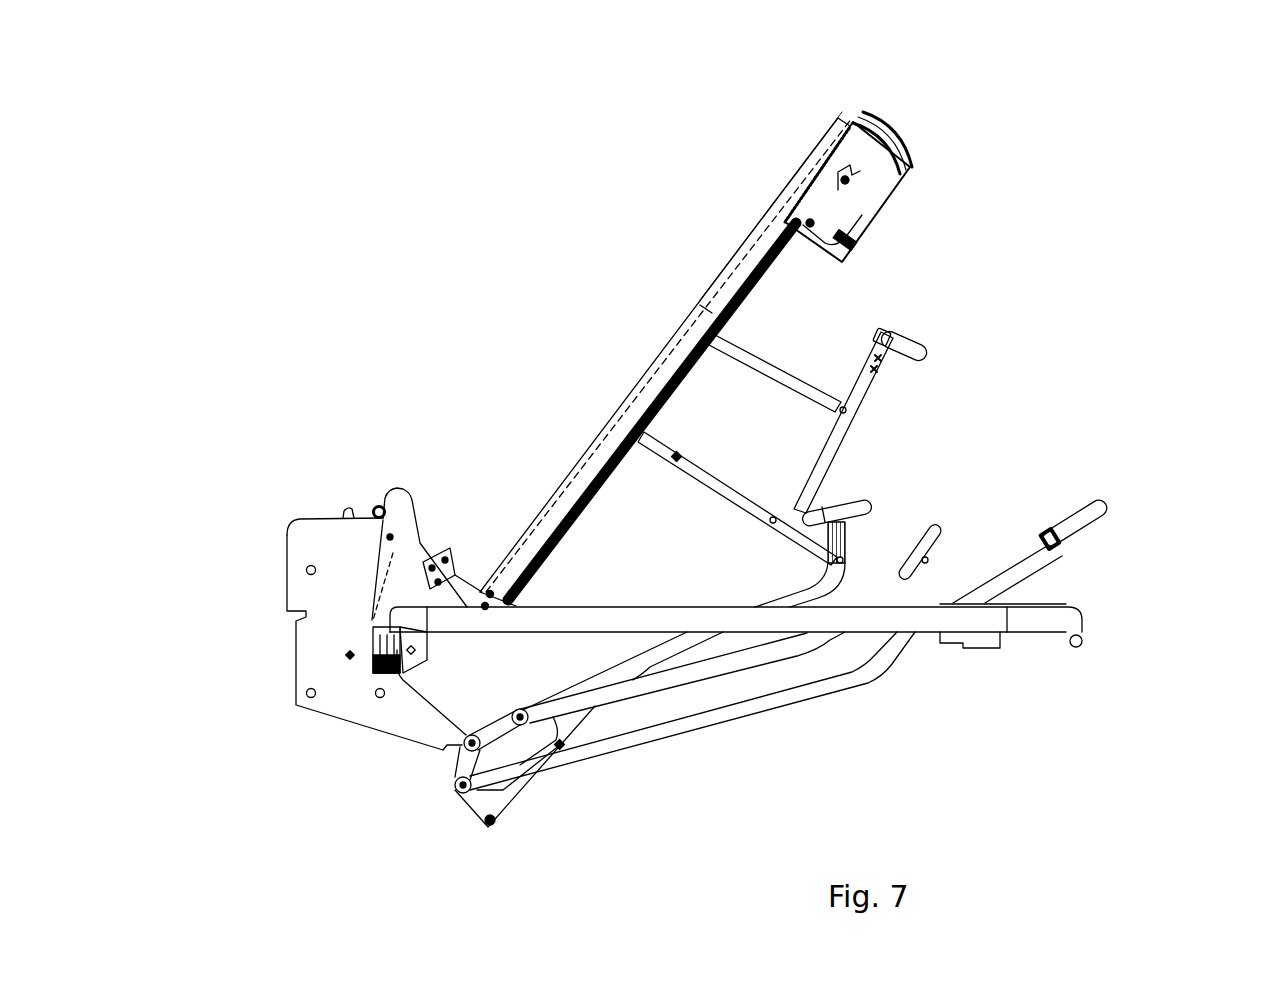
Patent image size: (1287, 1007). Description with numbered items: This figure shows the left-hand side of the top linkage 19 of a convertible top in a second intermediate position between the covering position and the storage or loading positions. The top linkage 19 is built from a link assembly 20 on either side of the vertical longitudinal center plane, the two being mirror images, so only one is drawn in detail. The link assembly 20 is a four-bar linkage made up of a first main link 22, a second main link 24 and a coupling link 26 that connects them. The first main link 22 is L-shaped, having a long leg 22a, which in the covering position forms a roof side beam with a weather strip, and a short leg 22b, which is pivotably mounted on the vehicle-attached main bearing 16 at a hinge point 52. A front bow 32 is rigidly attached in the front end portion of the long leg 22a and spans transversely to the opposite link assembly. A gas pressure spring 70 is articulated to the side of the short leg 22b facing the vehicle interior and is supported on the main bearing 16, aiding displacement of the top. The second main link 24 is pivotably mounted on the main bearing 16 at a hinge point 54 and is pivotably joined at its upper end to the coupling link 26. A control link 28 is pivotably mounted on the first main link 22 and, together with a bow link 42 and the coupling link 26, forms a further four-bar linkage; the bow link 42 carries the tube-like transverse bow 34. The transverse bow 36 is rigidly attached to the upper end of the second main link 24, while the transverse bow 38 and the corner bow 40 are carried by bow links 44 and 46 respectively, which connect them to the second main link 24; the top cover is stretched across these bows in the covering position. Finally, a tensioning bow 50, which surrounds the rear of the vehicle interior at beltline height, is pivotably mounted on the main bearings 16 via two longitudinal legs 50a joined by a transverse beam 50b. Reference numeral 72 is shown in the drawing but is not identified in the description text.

The main bearing 16 is at (364, 700).
The top linkage 19 is at (1155, 116).
The link assembly 20 is at (666, 349).
The first main link 22 is at (578, 480).
The long leg 22a is at (703, 312).
The short leg 22b is at (459, 583).
The second main link 24 is at (853, 557).
The coupling link 26 is at (704, 472).
The control link 28 is at (738, 347).
The front bow 32 is at (853, 190).
The transverse bow 34 is at (905, 345).
The transverse bow 36 is at (866, 498).
The transverse bow 38 is at (898, 580).
The corner bow 40 is at (1100, 515).
The bow link 42 is at (858, 390).
The bow link 44 is at (925, 560).
The bow link 46 is at (1005, 578).
The tensioning bow 50 is at (908, 613).
The leg 50a is at (665, 606).
The transverse beam 50b is at (1040, 634).
The hinge point 52 is at (374, 510).
The hinge point 54 is at (478, 744).
The gas pressure spring 70 is at (378, 573).
The upper bracket 72 is at (388, 536).